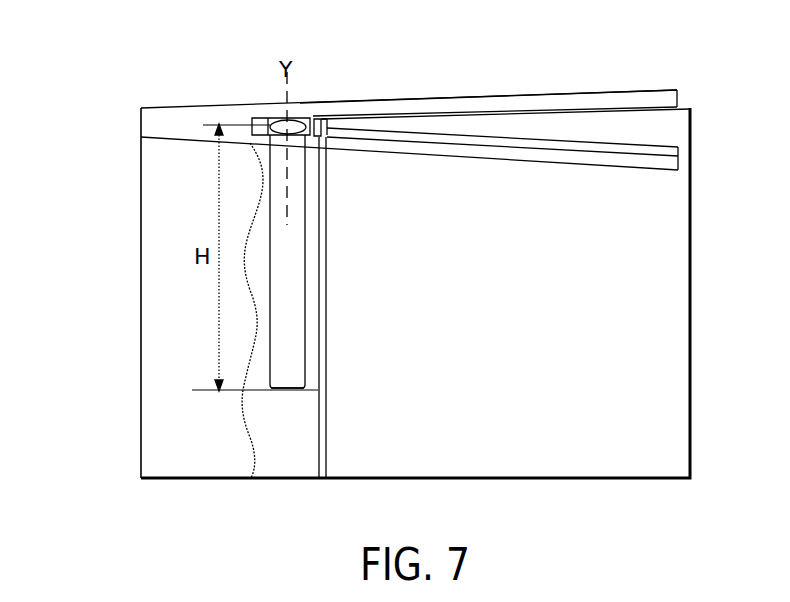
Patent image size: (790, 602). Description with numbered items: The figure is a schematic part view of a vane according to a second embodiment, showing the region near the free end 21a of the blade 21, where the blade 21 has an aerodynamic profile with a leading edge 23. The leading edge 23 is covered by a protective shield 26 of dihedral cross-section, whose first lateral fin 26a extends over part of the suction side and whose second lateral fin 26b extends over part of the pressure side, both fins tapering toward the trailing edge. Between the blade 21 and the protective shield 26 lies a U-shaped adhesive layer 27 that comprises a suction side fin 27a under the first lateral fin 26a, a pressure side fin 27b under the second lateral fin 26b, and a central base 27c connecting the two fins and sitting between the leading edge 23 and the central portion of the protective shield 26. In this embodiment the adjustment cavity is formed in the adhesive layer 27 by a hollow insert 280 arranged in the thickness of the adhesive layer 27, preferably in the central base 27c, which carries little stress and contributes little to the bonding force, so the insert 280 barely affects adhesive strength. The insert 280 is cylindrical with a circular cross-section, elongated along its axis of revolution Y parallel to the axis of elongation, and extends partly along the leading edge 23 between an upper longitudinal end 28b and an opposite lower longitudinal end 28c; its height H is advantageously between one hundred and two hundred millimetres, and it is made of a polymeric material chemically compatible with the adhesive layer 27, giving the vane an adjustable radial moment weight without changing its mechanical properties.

The blade 21 is at (681, 128).
The free end 21a is at (141, 119).
The leading edge 23 is at (317, 116).
The protective shield 26 is at (671, 97).
The first lateral fin 26a is at (490, 152).
The second lateral fin 26b is at (525, 100).
The adhesive layer 27 is at (681, 157).
The suction side fin 27a is at (393, 138).
The pressure side fin 27b is at (473, 113).
The central base 27c is at (260, 114).
The insert 280 is at (283, 325).
The upper longitudinal end 28b is at (251, 124).
The lower longitudinal end 28c is at (268, 388).